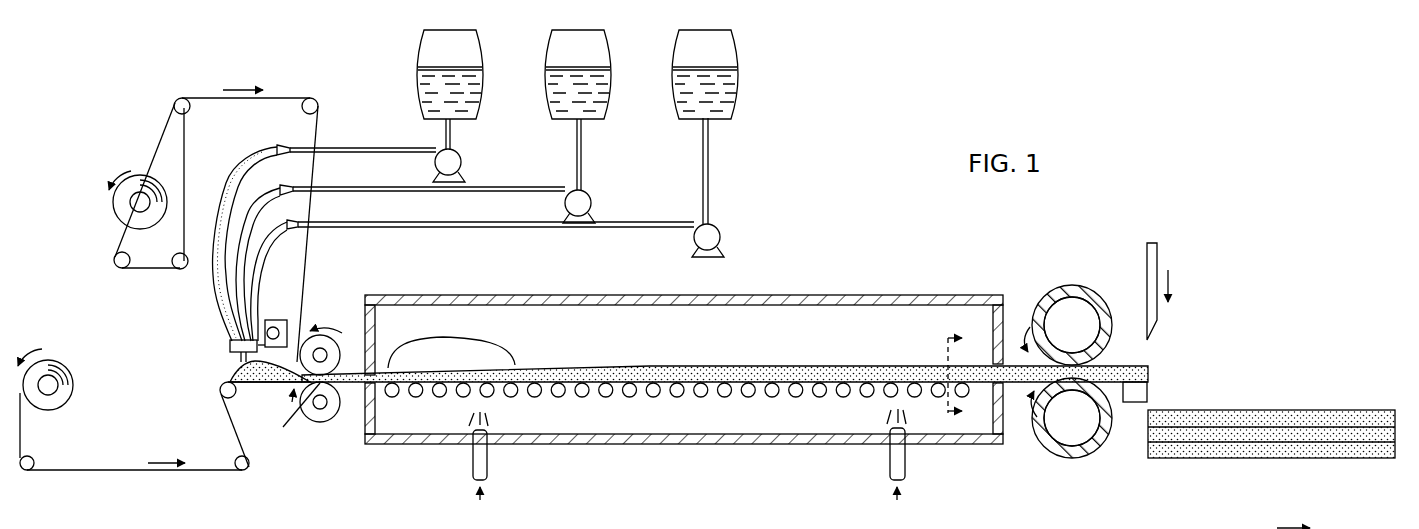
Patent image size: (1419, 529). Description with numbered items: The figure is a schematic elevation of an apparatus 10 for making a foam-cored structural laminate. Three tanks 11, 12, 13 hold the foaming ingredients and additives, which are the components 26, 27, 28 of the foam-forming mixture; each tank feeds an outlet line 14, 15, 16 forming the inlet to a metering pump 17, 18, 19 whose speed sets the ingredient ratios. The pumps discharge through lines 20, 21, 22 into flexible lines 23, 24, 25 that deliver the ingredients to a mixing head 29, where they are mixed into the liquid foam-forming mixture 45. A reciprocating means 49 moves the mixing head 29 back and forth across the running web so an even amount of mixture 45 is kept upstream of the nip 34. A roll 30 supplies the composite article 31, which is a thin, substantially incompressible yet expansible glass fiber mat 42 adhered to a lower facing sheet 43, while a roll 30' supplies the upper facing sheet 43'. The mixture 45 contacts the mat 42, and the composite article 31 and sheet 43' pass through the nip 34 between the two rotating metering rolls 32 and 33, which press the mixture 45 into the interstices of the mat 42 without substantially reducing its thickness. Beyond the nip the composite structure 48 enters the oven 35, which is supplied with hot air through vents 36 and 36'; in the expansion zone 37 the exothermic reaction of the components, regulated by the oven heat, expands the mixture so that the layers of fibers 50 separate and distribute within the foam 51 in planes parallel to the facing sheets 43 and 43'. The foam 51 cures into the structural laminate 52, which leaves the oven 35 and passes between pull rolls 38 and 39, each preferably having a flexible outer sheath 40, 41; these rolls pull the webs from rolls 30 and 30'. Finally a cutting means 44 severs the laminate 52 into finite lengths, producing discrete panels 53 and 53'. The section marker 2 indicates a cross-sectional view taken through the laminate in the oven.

The apparatus 10 is at (816, 237).
The tank 11 is at (483, 50).
The tank 12 is at (607, 53).
The tank 13 is at (738, 53).
The outlet line 14 is at (452, 131).
The outlet line 15 is at (583, 135).
The outlet line 16 is at (710, 137).
The metering pump 17 is at (462, 160).
The metering pump 18 is at (592, 193).
The metering pump 19 is at (720, 228).
The discharge line 20 is at (372, 147).
The discharge line 21 is at (373, 187).
The discharge line 22 is at (405, 222).
The flexible line 23 is at (232, 183).
The flexible line 24 is at (255, 202).
The flexible line 25 is at (275, 233).
The component of the foam-forming mixture 26 is at (418, 86).
The component of the foam-forming mixture 27 is at (547, 87).
The component of the foam-forming mixture 28 is at (675, 87).
The mixing head 29 is at (230, 347).
The roll of composite article 30 is at (64, 372).
The roll of upper facing sheet material 30' is at (138, 183).
The composite article 31 is at (21, 425).
The metering roll 32 is at (338, 343).
The metering roll 33 is at (321, 423).
The nip 34 is at (291, 415).
The oven 35 is at (887, 294).
The vent 36 is at (504, 456).
The vent 36' is at (925, 454).
The expansion zone 37 is at (451, 338).
The pull roll 38 is at (1063, 310).
The pull roll 39 is at (1065, 430).
The flexible outer sheath 40 is at (1100, 308).
The flexible outer sheath 41 is at (1095, 442).
The glass fiber mat 42 is at (128, 469).
The lower facing sheet material 43 is at (558, 445).
The upper facing sheet material 43' is at (631, 236).
The cutting means 44 is at (1158, 262).
The foam-forming mixture 45 is at (247, 384).
The composite structure 48 is at (348, 379).
The reciprocating means 49 is at (275, 320).
The layers of fibers 50 is at (403, 384).
The foam 51 is at (432, 391).
The structural laminate 52 is at (1012, 361).
The panel 53 is at (1271, 418).
The panel 53' is at (1271, 467).
The section line 2- 2 is at (965, 374).